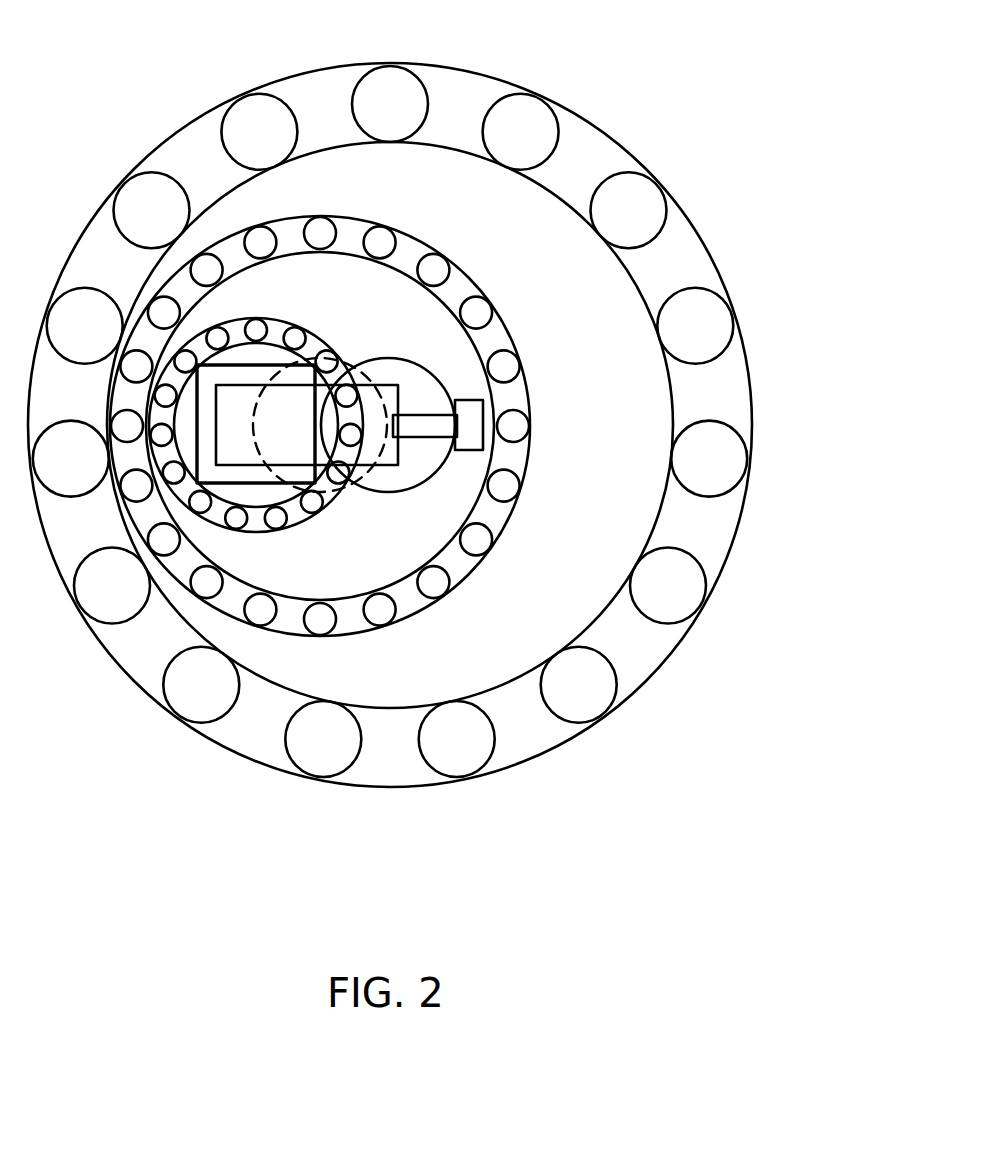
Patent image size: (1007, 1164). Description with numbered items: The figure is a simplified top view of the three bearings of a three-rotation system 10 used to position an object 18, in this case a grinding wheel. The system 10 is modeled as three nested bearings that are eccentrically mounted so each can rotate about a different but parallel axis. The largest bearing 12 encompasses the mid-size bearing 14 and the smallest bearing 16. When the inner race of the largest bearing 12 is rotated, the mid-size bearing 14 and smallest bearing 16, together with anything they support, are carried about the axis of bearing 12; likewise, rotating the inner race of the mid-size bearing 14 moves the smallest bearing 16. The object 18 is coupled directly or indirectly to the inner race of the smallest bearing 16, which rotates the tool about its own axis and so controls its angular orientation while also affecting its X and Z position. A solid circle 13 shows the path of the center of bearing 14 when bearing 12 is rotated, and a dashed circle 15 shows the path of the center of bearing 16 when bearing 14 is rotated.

The three-rotation system 10 is at (766, 73).
The largest bearing 12 is at (390, 425).
The solid circle 13 is at (457, 463).
The mid-size bearing 14 is at (359, 426).
The dashed circle 15 is at (375, 372).
The smallest bearing 16 is at (312, 495).
The object to be positioned 18 is at (485, 425).